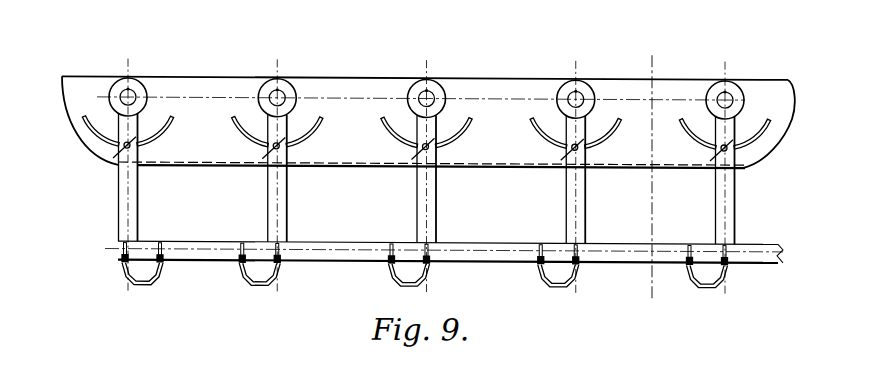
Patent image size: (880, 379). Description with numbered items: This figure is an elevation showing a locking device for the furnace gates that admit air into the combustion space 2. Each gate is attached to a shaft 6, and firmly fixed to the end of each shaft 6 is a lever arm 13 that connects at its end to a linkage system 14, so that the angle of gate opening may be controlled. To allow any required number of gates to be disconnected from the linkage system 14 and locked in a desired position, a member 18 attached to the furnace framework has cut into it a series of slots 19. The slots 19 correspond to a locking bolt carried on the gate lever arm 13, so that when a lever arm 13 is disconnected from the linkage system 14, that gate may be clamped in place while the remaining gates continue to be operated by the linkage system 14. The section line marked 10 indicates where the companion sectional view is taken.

The combustion space 2 is at (125, 146).
The shaft 6 is at (129, 88).
The section line 10- 10 is at (675, 52).
The lever arm 13 is at (133, 219).
The linkage system 14 is at (328, 249).
The member 18 is at (347, 82).
The slots 19 is at (472, 121).